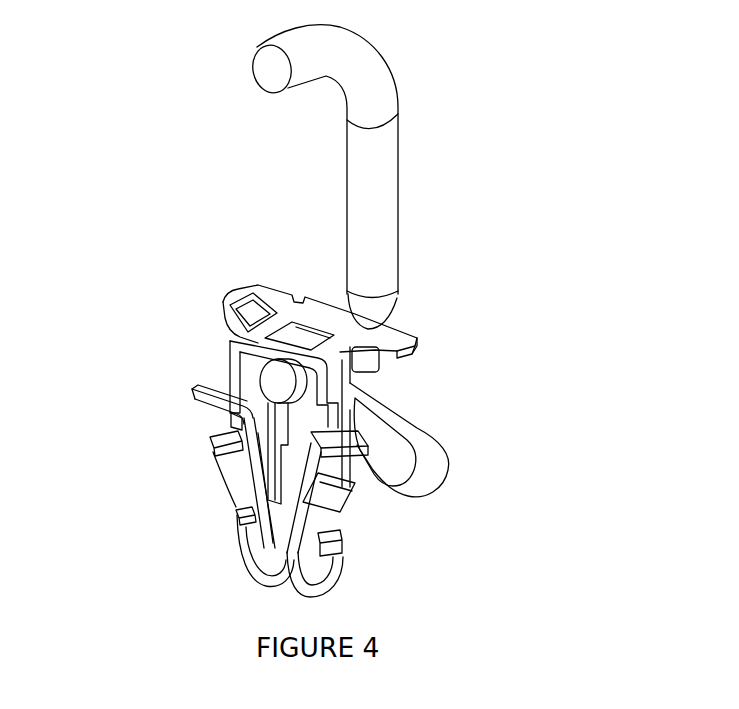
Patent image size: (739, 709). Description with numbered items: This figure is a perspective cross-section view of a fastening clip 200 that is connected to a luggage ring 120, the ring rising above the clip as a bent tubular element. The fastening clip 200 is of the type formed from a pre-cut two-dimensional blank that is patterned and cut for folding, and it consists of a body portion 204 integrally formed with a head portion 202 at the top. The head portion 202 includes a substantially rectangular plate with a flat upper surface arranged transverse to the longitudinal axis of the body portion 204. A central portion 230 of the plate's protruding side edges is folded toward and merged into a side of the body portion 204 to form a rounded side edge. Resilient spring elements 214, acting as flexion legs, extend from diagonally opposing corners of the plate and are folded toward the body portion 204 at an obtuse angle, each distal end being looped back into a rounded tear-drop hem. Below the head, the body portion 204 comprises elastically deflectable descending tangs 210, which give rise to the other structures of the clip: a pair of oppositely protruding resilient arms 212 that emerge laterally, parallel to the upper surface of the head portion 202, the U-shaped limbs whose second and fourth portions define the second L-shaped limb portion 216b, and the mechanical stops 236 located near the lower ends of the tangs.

The luggage ring 120 is at (385, 191).
The fastening clip 200 is at (170, 340).
The head portion 202 is at (274, 298).
The body portion 204 is at (145, 445).
The descending tangs 210 is at (240, 560).
The resilient arms 212 is at (196, 402).
The resilient spring elements 214 is at (423, 447).
The second L-shaped limb portion 216b is at (220, 478).
The central portion 230 is at (347, 330).
The mechanical stops 236 is at (225, 521).